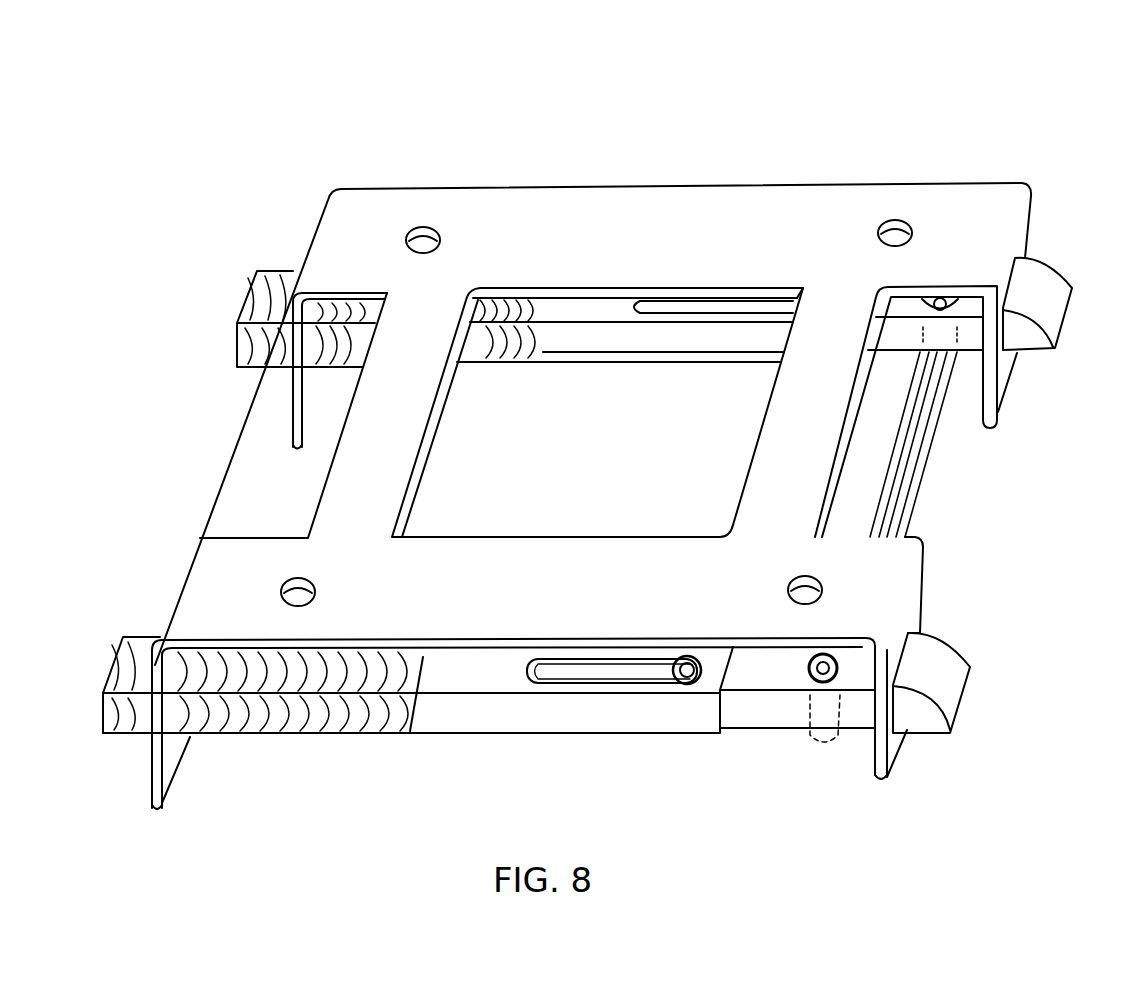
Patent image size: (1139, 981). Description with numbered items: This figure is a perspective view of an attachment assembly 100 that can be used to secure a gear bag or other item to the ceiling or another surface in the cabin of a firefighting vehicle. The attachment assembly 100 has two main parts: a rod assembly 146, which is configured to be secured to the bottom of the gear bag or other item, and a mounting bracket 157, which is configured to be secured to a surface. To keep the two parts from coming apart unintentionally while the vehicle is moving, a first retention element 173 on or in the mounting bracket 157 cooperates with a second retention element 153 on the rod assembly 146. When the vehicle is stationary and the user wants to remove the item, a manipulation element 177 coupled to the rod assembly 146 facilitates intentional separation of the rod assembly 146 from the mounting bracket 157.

The attachment assembly 100 is at (225, 148).
The mounting bracket 157 is at (624, 156).
The rod assembly 146 is at (294, 747).
The second retention element 153 is at (1076, 270).
The first retention element 173 is at (1007, 377).
The manipulation element 177 is at (939, 471).